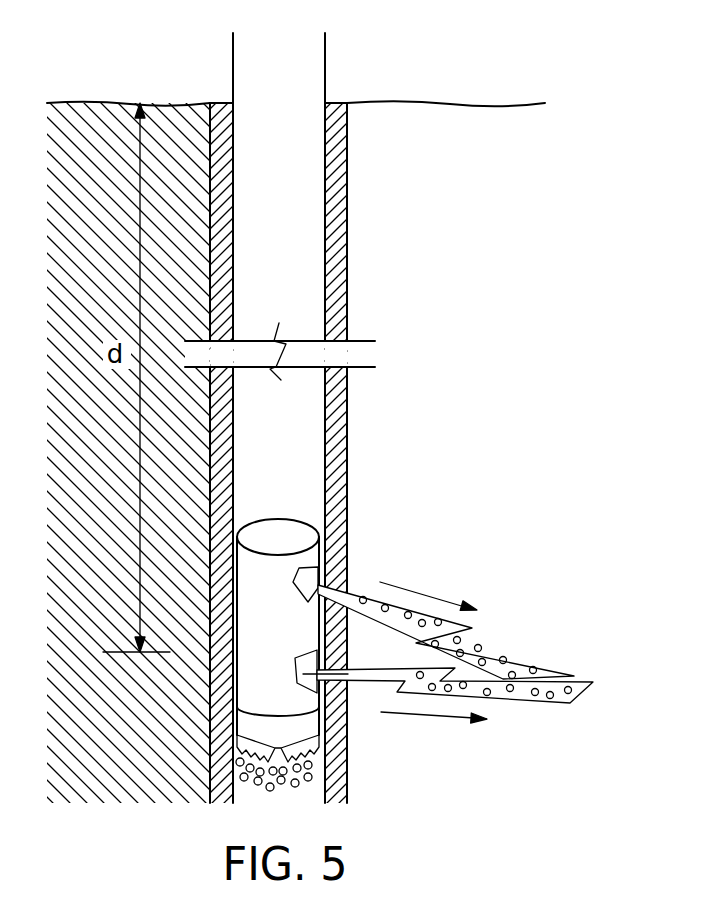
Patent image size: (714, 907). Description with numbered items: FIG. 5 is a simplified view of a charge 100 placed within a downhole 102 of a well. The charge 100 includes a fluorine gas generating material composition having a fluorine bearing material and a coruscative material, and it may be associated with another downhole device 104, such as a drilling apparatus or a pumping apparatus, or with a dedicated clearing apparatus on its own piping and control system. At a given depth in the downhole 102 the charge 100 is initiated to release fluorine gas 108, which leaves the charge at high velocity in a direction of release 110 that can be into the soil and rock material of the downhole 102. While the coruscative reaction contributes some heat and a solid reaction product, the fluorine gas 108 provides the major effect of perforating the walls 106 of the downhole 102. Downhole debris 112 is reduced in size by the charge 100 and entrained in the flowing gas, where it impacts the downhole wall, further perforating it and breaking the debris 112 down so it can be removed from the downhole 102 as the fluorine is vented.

The charge 100 is at (296, 642).
The downhole 102 is at (341, 93).
The downhole device 104 is at (296, 158).
The walls 106 is at (225, 122).
The fluorine gas 108 is at (510, 667).
The direction of release 110 is at (433, 655).
The downhole debris 112 is at (485, 643).